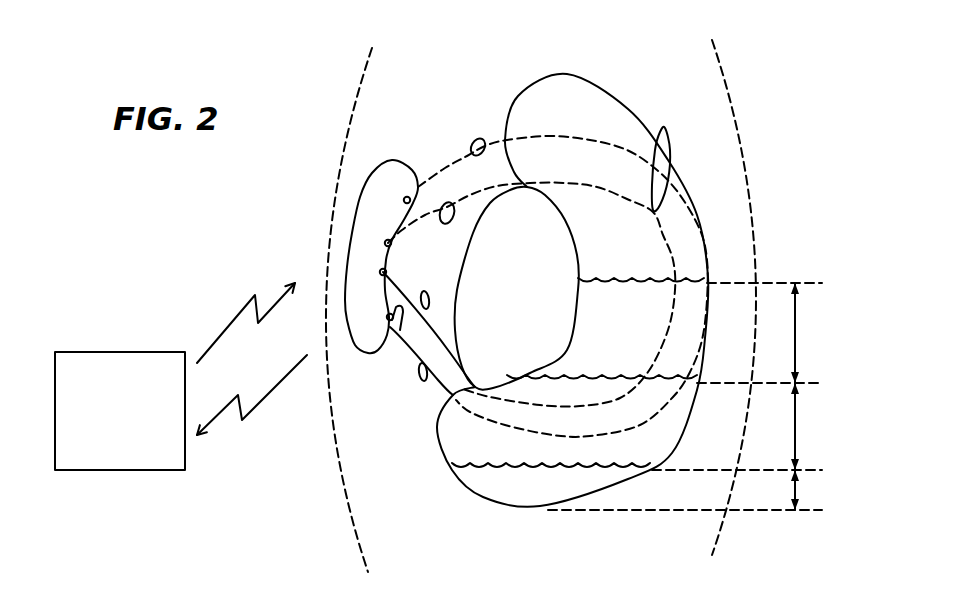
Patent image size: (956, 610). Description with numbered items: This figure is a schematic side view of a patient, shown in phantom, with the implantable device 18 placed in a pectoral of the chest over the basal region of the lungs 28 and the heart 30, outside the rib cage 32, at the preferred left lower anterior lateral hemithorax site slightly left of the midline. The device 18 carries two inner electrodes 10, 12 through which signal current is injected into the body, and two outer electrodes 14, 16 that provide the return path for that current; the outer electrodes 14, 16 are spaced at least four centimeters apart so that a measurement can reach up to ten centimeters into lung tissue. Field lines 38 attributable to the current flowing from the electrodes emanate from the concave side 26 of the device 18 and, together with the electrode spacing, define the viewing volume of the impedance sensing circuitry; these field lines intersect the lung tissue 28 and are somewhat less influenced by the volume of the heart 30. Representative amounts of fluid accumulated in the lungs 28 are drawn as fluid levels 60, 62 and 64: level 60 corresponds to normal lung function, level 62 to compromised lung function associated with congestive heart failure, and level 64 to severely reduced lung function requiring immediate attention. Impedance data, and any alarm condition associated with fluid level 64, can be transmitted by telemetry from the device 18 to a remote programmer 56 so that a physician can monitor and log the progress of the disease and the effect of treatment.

The inner electrode 10 is at (385, 242).
The inner electrode 12 is at (380, 271).
The outer electrode 14 is at (407, 197).
The outer electrode 16 is at (387, 317).
The device 18 is at (360, 203).
The concave side 26 is at (400, 331).
The lungs 28 is at (618, 87).
The heart 30 is at (502, 297).
The rib cage 32 is at (474, 138).
The field lines 38 is at (669, 132).
The remote programmer 56 is at (70, 352).
The fluid level 60 is at (687, 490).
The fluid level 62 is at (739, 426).
The fluid level 64 is at (762, 333).